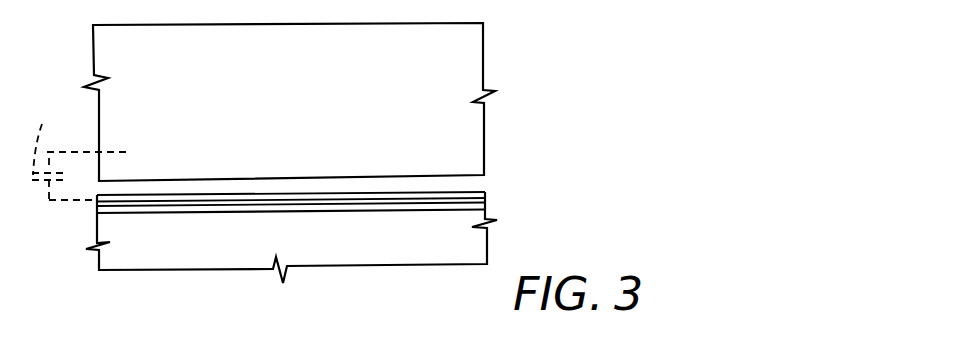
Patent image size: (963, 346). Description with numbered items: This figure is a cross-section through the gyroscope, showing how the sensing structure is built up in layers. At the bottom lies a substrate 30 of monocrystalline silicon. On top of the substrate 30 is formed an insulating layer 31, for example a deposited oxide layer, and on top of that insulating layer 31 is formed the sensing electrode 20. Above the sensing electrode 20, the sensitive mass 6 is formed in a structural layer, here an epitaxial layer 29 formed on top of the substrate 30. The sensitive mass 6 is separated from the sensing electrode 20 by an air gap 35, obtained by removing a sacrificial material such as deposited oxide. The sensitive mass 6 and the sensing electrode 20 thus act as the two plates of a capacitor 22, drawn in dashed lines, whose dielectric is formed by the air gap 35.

The sensitive mass 6 is at (309, 99).
The sensing electrode 20 is at (348, 181).
The capacitor 22 is at (80, 148).
The epitaxial layer 29 is at (458, 161).
The substrate 30 is at (453, 245).
The insulating layer 31 is at (486, 203).
The air gap 35 is at (461, 183).